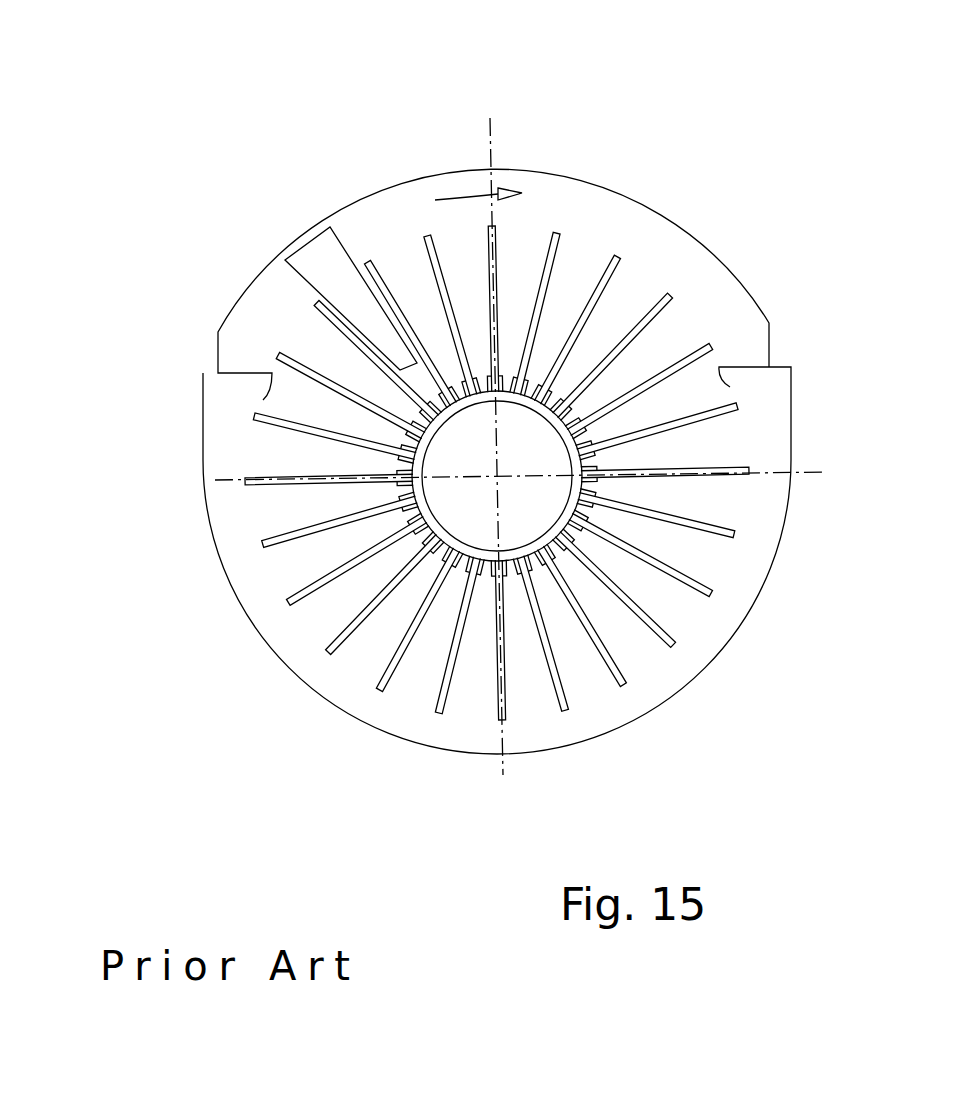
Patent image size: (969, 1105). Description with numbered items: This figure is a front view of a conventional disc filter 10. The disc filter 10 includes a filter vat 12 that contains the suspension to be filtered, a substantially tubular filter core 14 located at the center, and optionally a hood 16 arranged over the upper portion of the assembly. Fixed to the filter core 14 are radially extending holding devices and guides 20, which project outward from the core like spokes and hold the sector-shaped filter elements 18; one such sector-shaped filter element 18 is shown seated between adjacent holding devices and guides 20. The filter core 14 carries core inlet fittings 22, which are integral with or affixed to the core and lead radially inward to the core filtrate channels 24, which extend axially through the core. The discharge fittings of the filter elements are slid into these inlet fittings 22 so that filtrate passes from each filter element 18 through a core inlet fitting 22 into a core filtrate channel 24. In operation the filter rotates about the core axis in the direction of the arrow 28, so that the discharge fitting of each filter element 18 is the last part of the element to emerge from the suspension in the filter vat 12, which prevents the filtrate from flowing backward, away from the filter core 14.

The disc filter 10 is at (192, 75).
The filter vat 12 is at (410, 740).
The filter core 14 is at (458, 522).
The hood 16 is at (235, 303).
The sector-shaped filter element 18 is at (330, 265).
The holding devices and guides 20 is at (255, 477).
The core inlet fitting 22 is at (504, 373).
The core filtrate channel 24 is at (540, 357).
The arrow 28 is at (478, 193).